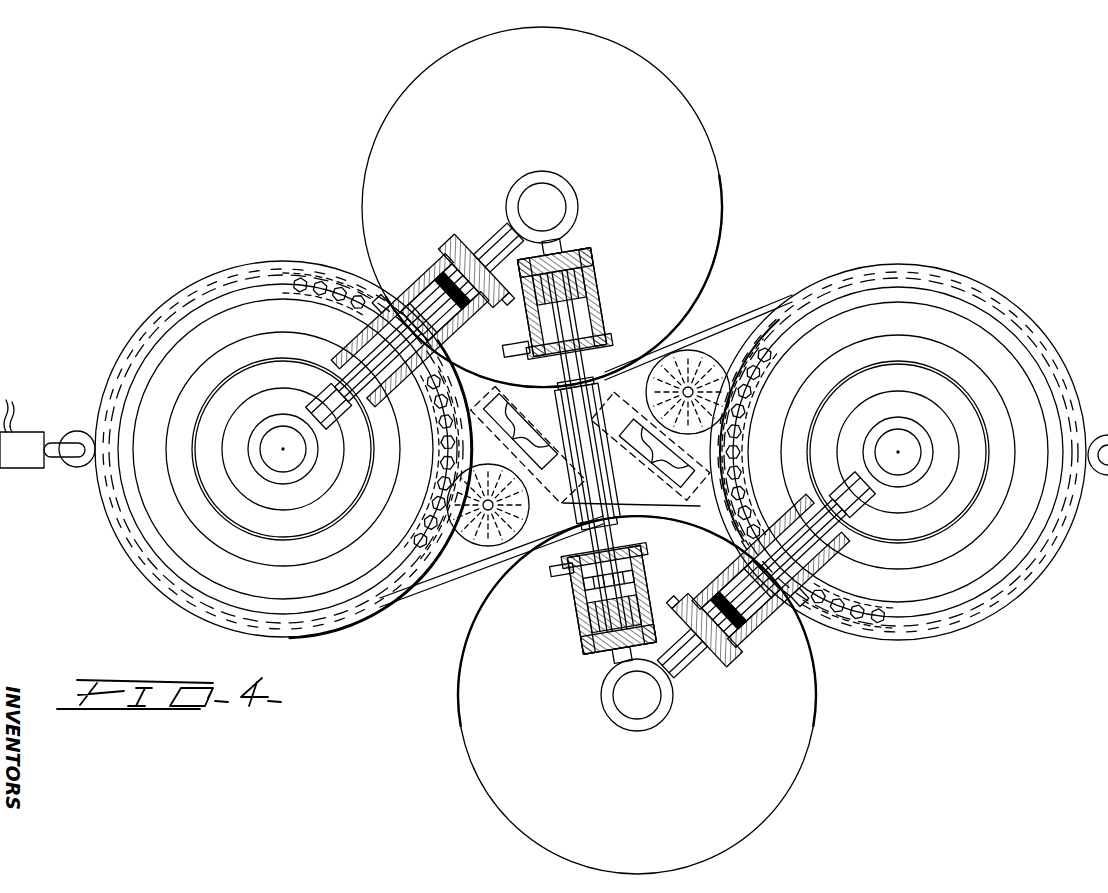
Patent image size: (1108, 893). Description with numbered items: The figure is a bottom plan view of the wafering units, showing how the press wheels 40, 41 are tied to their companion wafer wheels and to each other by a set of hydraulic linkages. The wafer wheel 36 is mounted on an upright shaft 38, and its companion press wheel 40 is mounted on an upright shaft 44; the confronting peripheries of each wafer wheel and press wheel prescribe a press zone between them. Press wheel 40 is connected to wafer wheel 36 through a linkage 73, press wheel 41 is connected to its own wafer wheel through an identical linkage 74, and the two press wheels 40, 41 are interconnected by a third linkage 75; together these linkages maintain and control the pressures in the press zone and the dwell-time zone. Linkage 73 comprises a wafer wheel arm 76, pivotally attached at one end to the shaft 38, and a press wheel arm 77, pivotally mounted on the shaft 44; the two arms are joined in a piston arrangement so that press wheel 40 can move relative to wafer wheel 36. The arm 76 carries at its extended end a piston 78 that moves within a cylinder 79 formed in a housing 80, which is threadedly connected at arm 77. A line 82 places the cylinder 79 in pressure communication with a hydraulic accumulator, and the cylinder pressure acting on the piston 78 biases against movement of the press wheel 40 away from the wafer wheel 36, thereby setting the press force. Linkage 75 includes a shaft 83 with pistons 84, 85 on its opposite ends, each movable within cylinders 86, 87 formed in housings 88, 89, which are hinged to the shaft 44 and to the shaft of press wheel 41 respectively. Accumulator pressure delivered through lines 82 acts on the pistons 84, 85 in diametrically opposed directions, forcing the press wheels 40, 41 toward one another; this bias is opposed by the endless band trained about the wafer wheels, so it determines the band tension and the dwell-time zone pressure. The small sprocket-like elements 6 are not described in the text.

The idler sprocket 6 is at (468, 482).
The wafer wheel 36 is at (318, 592).
The upright shaft 38 is at (278, 432).
The press wheel 40 is at (712, 176).
The press wheel 41 is at (802, 733).
The upright shaft 44 is at (556, 194).
The linkage 73 is at (425, 251).
The linkage 74 is at (785, 620).
The linkage 75 is at (612, 318).
The wafer wheel arm 76 is at (325, 436).
The press wheel arm 77 is at (497, 233).
The piston 78 is at (465, 312).
The cylinder 79 is at (412, 290).
The housing 80 is at (690, 603).
The line 82 is at (388, 312).
The shaft 83 is at (598, 405).
The piston 84 is at (590, 270).
The piston 85 is at (593, 607).
The cylinder 86 is at (585, 302).
The cylinder 87 is at (638, 572).
The housing 88 is at (600, 347).
The housing 89 is at (577, 583).